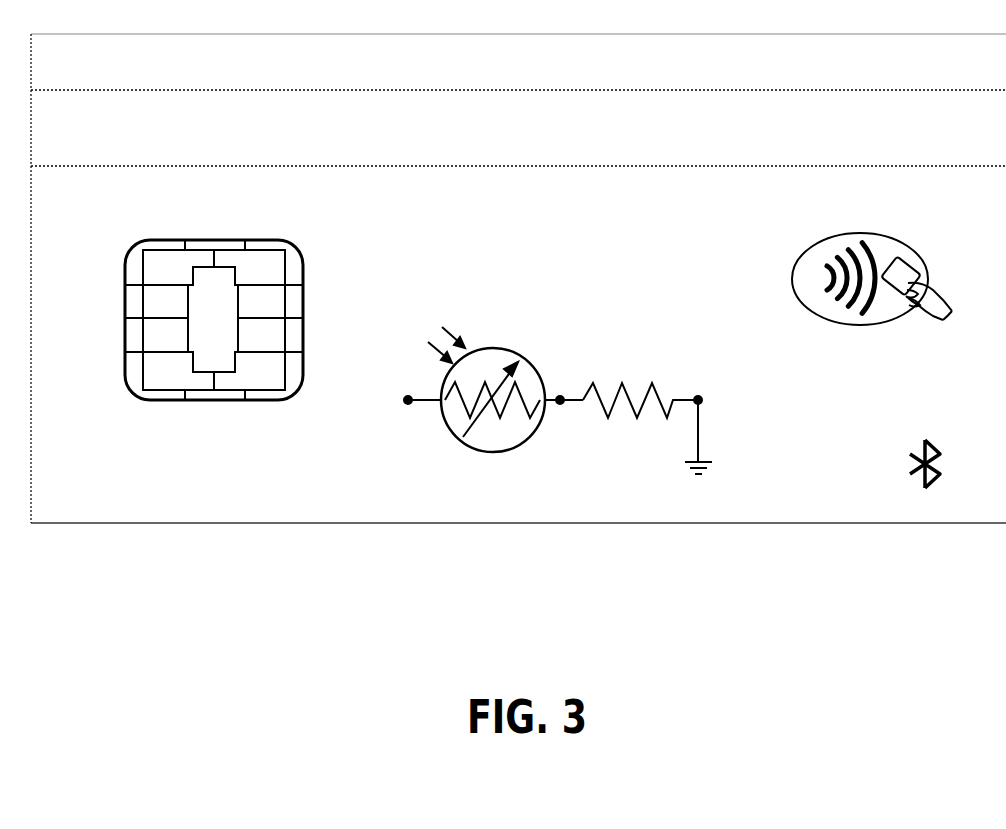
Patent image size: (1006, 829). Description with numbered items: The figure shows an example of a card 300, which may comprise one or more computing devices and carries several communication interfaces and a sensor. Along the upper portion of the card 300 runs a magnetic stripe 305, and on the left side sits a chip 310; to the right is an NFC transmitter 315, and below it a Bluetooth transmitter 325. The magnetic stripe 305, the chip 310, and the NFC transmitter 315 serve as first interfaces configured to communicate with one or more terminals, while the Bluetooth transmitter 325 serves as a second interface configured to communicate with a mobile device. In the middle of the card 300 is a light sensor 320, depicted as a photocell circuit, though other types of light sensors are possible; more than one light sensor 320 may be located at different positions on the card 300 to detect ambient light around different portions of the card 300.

The card 300 is at (518, 278).
The magnetic stripe 305 is at (518, 128).
The chip 310 is at (214, 289).
The NFC transmitter 315 is at (860, 250).
The light sensor 320 is at (558, 377).
The Bluetooth transmitter 325 is at (932, 428).